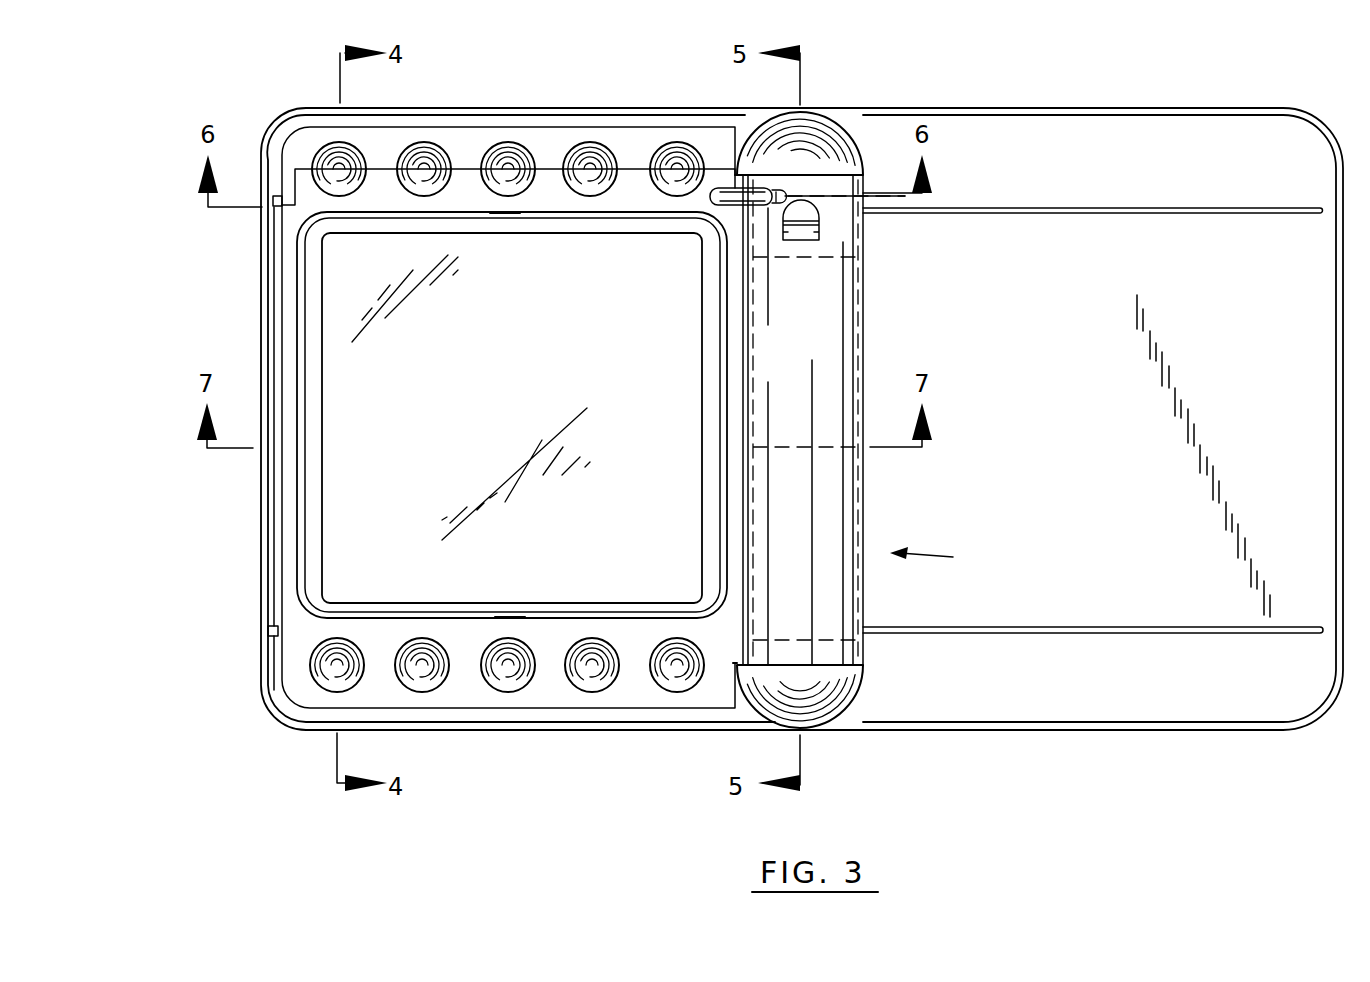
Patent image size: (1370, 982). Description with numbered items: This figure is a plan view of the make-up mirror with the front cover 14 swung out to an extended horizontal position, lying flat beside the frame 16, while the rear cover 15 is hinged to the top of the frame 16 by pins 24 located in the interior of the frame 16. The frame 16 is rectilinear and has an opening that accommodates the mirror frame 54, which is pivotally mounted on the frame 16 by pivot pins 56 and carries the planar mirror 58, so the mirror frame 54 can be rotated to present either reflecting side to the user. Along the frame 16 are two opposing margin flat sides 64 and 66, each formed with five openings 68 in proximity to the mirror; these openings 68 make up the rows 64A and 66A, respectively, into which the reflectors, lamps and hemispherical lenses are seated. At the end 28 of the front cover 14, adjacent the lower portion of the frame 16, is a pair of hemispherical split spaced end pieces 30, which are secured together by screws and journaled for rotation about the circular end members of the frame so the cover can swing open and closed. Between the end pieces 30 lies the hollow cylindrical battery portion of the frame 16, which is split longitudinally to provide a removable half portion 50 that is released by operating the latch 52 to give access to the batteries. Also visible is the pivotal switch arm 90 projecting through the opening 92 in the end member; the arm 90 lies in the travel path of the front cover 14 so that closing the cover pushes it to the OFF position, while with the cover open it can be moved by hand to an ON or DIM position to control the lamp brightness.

The front cover 14 is at (1115, 137).
The rear cover 15 is at (262, 562).
The frame 16 is at (293, 650).
The pins 24 is at (270, 197).
The end 28 is at (940, 557).
The hemispherical split spaced end pieces 30 is at (822, 125).
The removable half portion 50 is at (835, 297).
The latch 52 is at (820, 223).
The mirror frame 54 is at (315, 352).
The pivot pins 56 is at (505, 214).
The planar mirror 58 is at (340, 298).
The margin flat surface or side 64 is at (459, 708).
The row 64A is at (328, 672).
The margin flat surface or side 66 is at (492, 414).
The row 66A is at (424, 135).
The openings 68 is at (330, 150).
The pivotal switch arm 90 is at (728, 185).
The opening 92 is at (776, 206).